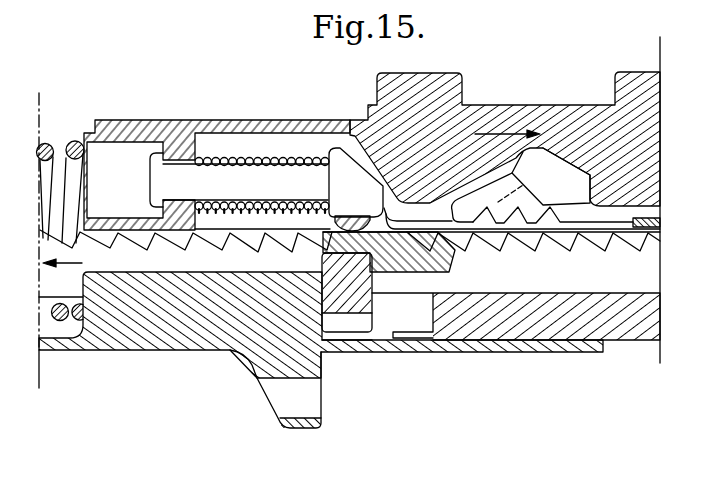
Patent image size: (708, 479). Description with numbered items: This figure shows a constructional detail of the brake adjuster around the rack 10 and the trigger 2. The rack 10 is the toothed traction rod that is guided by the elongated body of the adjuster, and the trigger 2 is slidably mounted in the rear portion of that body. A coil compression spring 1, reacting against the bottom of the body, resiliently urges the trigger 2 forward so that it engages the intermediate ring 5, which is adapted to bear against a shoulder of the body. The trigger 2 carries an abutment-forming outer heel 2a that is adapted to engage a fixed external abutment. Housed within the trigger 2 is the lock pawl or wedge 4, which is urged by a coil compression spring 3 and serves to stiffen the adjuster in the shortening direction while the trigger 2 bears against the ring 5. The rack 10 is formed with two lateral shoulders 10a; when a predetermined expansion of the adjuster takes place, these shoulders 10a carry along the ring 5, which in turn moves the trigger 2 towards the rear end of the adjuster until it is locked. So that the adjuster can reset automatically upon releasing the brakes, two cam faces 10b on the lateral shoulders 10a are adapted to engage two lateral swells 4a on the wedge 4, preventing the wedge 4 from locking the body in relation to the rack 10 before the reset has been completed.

The coil compression spring 1 is at (73, 142).
The trigger 2 is at (134, 137).
The abutment-forming outer heel 2a is at (272, 368).
The coil compression spring 3 is at (263, 163).
The lock pawl or wedge 4 is at (335, 158).
The lateral swells 4a is at (350, 215).
The intermediate ring 5 is at (357, 300).
The rack 10 is at (583, 286).
The lateral shoulders 10a is at (383, 262).
The cam faces 10b is at (322, 265).